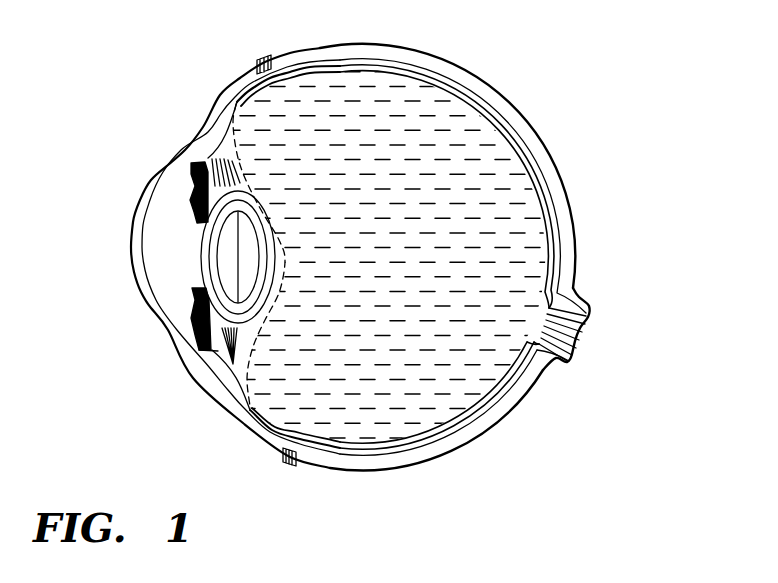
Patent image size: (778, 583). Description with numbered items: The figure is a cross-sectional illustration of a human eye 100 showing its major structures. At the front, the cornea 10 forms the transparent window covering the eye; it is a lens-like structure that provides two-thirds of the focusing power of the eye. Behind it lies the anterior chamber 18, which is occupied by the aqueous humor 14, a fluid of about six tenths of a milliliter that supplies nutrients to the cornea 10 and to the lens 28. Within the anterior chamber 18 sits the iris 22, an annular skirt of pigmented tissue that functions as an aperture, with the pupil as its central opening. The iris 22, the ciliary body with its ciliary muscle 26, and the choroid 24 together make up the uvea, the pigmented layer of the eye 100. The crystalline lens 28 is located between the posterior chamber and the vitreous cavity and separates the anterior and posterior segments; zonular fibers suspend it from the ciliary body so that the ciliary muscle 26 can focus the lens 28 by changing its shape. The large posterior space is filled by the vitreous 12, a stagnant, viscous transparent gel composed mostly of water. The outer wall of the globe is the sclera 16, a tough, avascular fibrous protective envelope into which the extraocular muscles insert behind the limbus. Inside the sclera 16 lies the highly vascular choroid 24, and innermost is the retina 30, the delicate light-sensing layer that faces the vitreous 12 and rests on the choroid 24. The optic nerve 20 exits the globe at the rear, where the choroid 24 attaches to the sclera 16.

The eye 100 is at (207, 52).
The cornea 10 is at (154, 312).
The vitreous humor 12 is at (389, 217).
The aqueous humor 14 is at (192, 322).
The sclera 16 is at (522, 131).
The anterior chamber 18 is at (177, 249).
The optic nerve 20 is at (579, 333).
The iris 22 is at (193, 210).
The choroid 24 is at (488, 407).
The ciliary muscle 26 is at (210, 152).
The lens 28 is at (223, 263).
The retina 30 is at (492, 383).